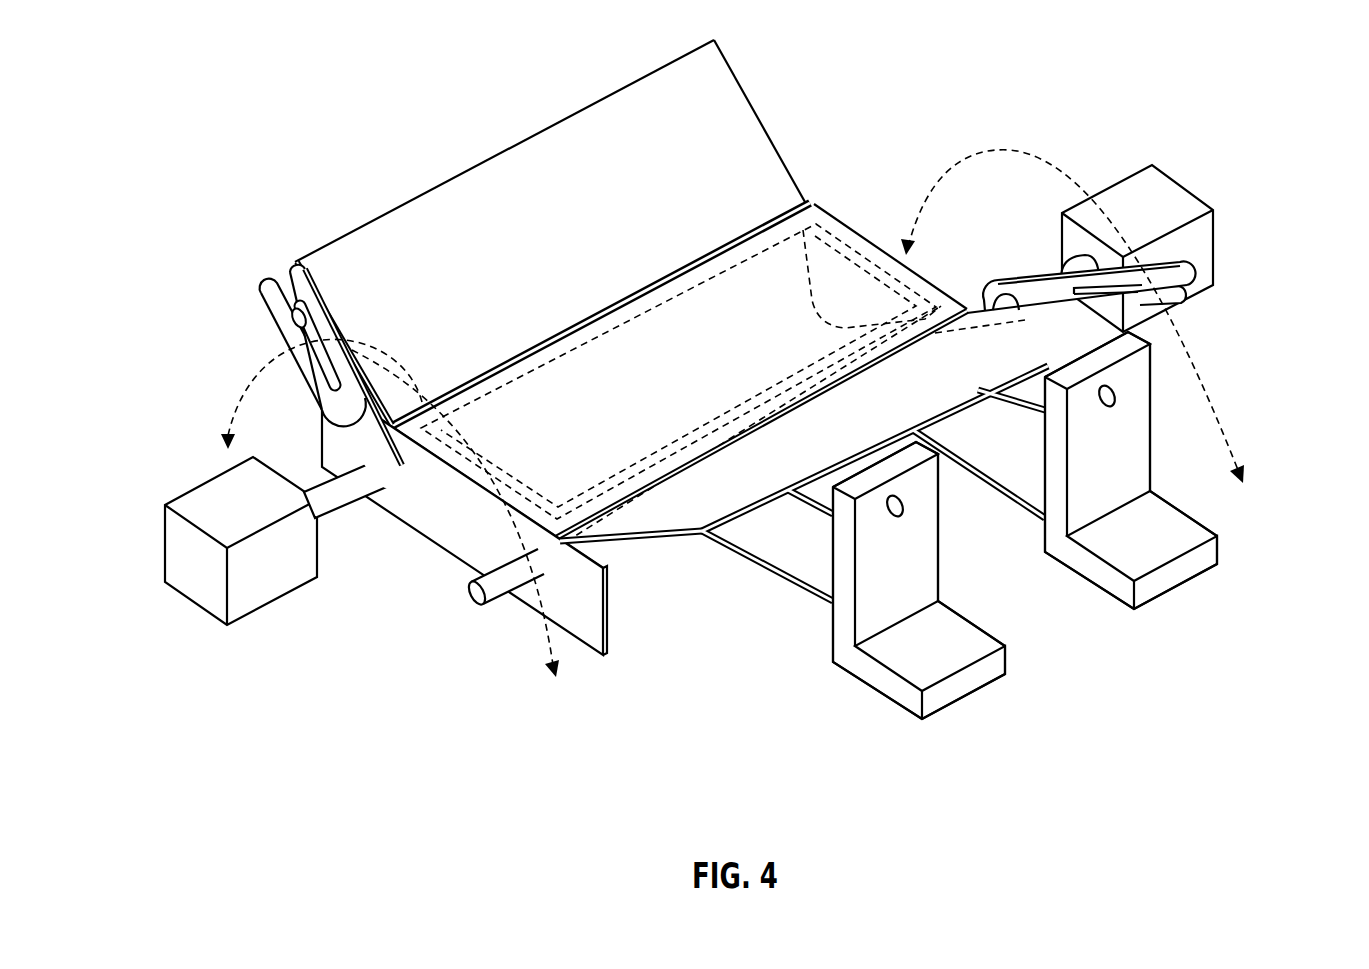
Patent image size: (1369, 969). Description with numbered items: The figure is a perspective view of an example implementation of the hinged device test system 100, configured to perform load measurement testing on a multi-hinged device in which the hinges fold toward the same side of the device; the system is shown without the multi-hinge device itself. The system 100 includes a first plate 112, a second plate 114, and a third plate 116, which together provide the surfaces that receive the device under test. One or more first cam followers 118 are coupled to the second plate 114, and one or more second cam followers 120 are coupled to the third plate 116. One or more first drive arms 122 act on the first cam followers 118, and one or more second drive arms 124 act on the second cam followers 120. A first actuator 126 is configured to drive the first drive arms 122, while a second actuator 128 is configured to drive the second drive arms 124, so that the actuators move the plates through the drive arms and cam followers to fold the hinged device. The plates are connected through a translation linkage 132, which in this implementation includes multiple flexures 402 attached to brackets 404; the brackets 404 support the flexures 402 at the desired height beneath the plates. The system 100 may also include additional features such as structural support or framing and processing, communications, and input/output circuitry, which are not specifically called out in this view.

The hinged device test system 100 is at (262, 62).
The first plate 112 is at (833, 220).
The second plate 114 is at (448, 196).
The third plate 116 is at (1183, 300).
The first cam followers 118 is at (287, 300).
The second cam followers 120 is at (1118, 256).
The first drive arms 122 is at (271, 312).
The second drive arms 124 is at (1190, 286).
The first actuator 126 is at (197, 498).
The second actuator 128 is at (1178, 193).
The translation linkage 132 is at (763, 700).
The flexures 402 is at (748, 556).
The brackets 404 is at (893, 688).